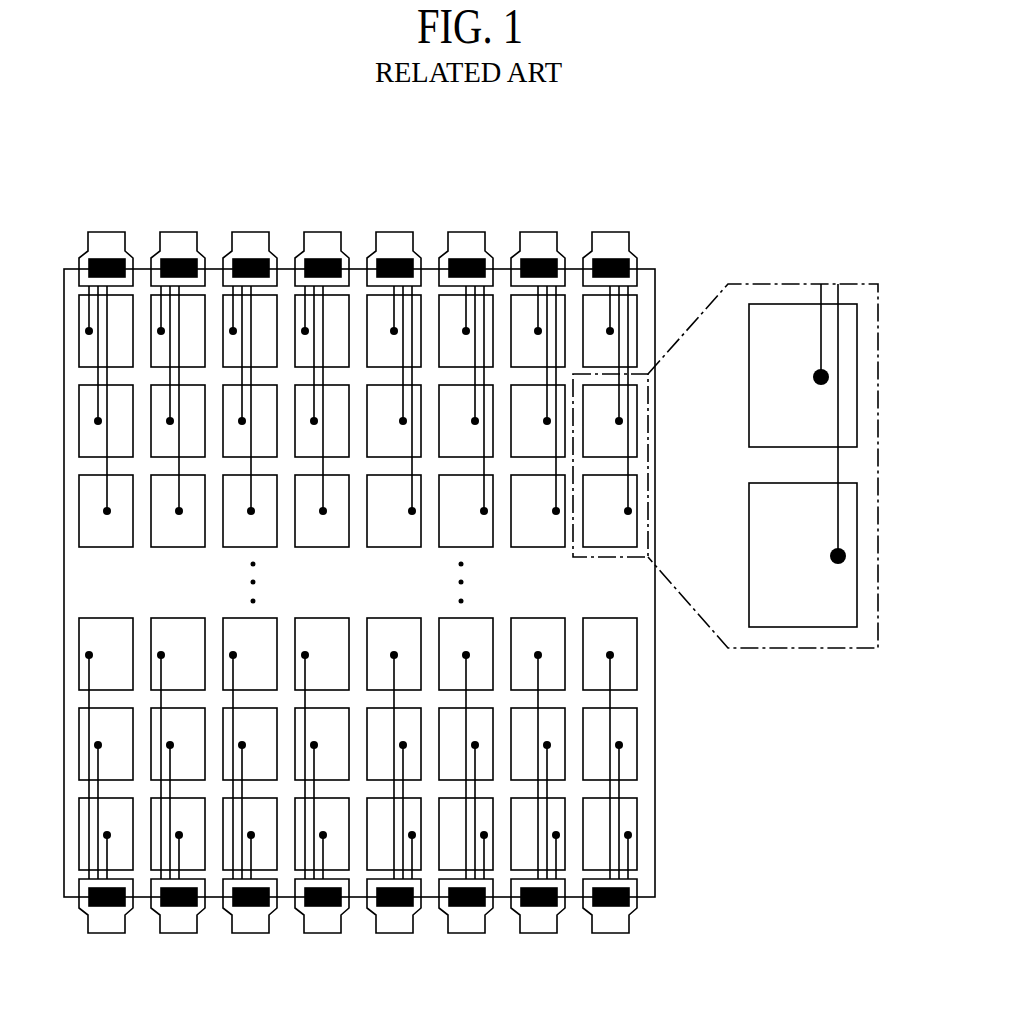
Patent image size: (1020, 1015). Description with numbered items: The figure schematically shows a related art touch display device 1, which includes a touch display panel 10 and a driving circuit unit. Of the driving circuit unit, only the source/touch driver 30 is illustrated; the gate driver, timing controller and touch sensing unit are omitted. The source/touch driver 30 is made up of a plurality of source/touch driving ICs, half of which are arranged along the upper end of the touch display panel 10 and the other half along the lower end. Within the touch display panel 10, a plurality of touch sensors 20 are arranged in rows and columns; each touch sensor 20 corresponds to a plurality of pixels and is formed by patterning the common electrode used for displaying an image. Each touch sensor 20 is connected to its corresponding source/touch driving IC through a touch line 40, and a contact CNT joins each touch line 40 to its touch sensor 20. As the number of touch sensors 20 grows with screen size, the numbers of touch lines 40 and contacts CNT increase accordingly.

The touch display device 1 is at (472, 144).
The touch display panel 10 is at (648, 266).
The touch sensor 20 is at (105, 550).
The source/touch driver 30 is at (620, 223).
The touch line 40 is at (838, 466).
The contact CNT is at (836, 564).